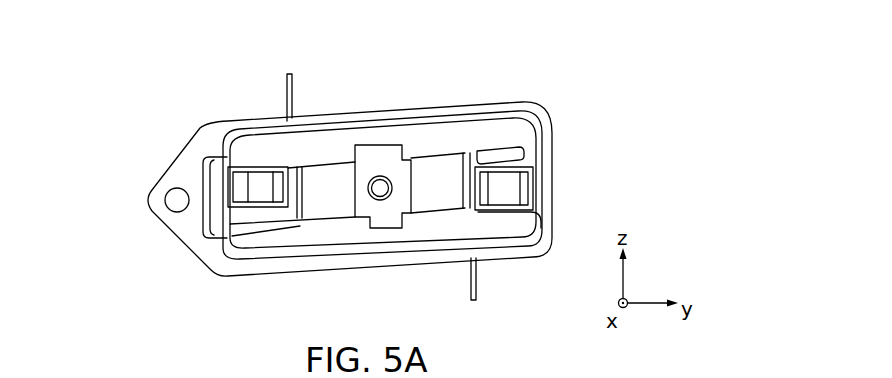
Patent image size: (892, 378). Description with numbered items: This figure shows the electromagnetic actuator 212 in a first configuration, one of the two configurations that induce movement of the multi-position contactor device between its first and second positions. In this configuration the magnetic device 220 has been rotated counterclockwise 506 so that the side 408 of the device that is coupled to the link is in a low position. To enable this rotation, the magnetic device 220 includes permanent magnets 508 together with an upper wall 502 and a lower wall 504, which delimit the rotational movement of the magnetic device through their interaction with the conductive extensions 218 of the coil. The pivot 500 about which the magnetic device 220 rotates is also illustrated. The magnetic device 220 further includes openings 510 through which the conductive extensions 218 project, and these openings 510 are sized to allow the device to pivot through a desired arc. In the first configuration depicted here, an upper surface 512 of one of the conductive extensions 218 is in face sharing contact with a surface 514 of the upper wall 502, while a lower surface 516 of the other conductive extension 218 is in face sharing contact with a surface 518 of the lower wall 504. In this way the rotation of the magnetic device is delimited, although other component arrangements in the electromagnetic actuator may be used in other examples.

The electromagnetic actuator 212 is at (566, 63).
The conductive extensions 218 is at (262, 183).
The magnetic device 220 is at (232, 106).
The side 408 is at (128, 193).
The pivot 500 is at (378, 182).
The upper wall 502 is at (467, 118).
The lower wall 504 is at (427, 245).
The counterclockwise rotation 506 is at (190, 247).
The permanent magnets 508 is at (318, 178).
The openings 510 is at (520, 152).
The upper surface 512 is at (278, 175).
The surface of the upper wall 514 is at (255, 183).
The lower surface 516 is at (498, 200).
The surface of the lower wall 518 is at (500, 194).